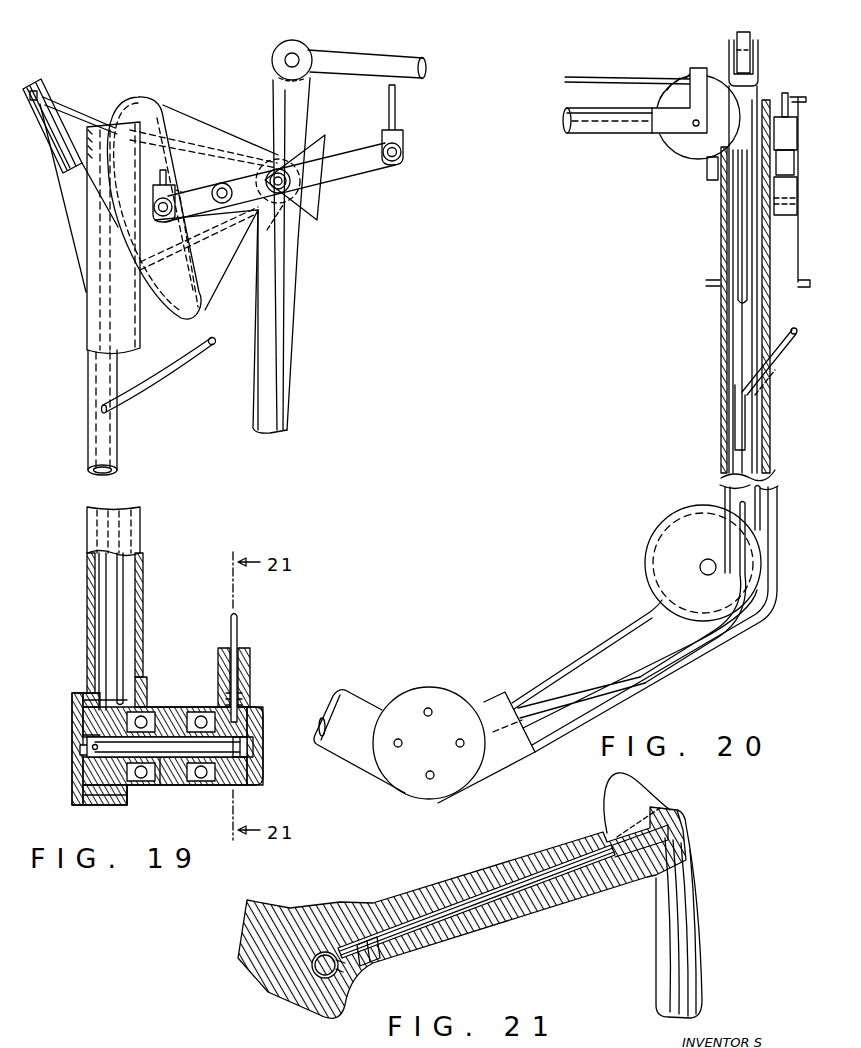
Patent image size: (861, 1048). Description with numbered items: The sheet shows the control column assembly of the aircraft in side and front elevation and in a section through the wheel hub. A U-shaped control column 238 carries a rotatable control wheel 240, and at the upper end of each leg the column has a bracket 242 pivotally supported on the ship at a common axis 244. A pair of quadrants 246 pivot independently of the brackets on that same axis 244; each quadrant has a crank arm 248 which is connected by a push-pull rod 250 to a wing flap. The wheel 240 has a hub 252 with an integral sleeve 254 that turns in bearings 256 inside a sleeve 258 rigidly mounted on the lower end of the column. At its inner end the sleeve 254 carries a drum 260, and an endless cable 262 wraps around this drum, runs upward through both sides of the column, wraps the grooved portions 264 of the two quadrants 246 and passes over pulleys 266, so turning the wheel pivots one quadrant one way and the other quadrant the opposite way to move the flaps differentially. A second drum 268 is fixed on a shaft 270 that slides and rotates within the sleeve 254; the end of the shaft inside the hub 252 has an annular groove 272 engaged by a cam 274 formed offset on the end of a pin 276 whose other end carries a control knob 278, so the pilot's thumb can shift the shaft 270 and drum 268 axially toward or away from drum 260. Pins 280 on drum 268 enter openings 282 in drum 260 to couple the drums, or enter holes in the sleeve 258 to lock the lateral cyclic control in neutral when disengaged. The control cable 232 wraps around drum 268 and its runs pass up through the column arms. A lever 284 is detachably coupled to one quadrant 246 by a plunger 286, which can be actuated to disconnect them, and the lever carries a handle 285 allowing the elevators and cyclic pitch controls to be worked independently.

In FIG. 19, the control cable 232 is at (160, 365).
In FIG. 20, the control cable 232 is at (735, 423).
In FIG. 19, the U-shaped control column 238 is at (143, 628).
In FIG. 20, the U-shaped control column 238 is at (738, 388).
In FIG. 19, the control wheel 240 is at (250, 686).
In FIG. 21, the control wheel 240 is at (585, 885).
In FIG. 19, the bracket 242 is at (205, 160).
In FIG. 19, the pivot axis 244 is at (284, 186).
In FIG. 19, the quadrant 246 is at (220, 270).
In FIG. 20, the quadrant 246 is at (738, 270).
In FIG. 19, the crank arm 248 is at (302, 132).
In FIG. 20, the crank arm 248 is at (726, 72).
In FIG. 19, the push-pull rod 250 is at (410, 64).
In FIG. 20, the push-pull rod 250 is at (744, 36).
In FIG. 19, the hub 252 is at (262, 716).
In FIG. 20, the hub 252 is at (546, 644).
In FIG. 19, the sleeve 254 is at (185, 780).
In FIG. 19, the bearings 256 is at (165, 712).
In FIG. 19, the sleeve 258 is at (160, 790).
In FIG. 19, the drum 260 is at (110, 800).
In FIG. 19, the endless cable 262 is at (120, 580).
In FIG. 20, the endless cable 262 is at (750, 455).
In FIG. 19, the grooved portion 264 is at (140, 103).
In FIG. 20, the grooved portion 264 is at (733, 310).
In FIG. 19, the pulley 266 is at (52, 115).
In FIG. 20, the pulley 266 is at (690, 150).
In FIG. 19, the second drum 268 is at (85, 762).
In FIG. 19, the shaft 270 is at (95, 745).
In FIG. 21, the shaft 270 is at (323, 980).
In FIG. 19, the annular groove 272 is at (262, 780).
In FIG. 21, the annular groove 272 is at (340, 1012).
In FIG. 19, the cam 274 is at (255, 750).
In FIG. 21, the cam 274 is at (318, 945).
In FIG. 19, the pin 276 is at (240, 640).
In FIG. 21, the pin 276 is at (510, 888).
In FIG. 21, the control knob 278 is at (645, 805).
In FIG. 19, the pins 280 is at (80, 712).
In FIG. 19, the openings 282 is at (130, 800).
In FIG. 20, the lever 284 is at (772, 115).
In FIG. 19, the handle 285 is at (290, 422).
In FIG. 19, the plunger 286 is at (224, 183).
In FIG. 20, the plunger 286 is at (765, 200).